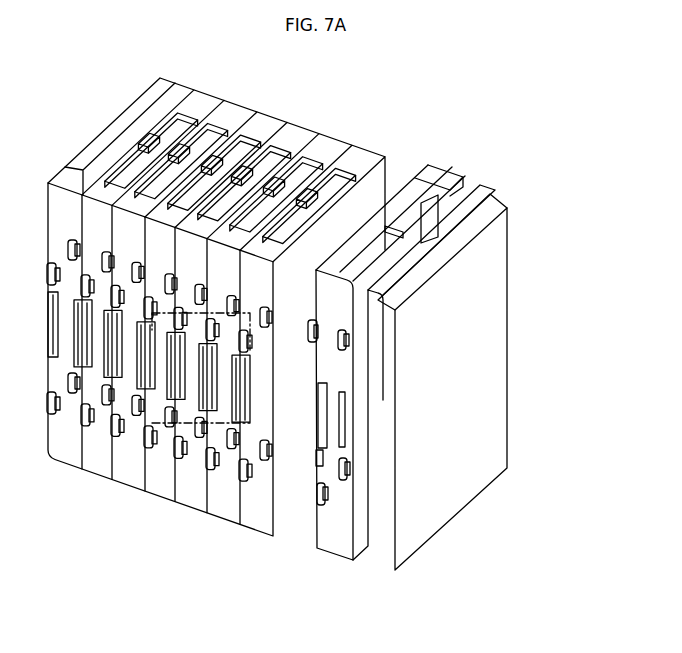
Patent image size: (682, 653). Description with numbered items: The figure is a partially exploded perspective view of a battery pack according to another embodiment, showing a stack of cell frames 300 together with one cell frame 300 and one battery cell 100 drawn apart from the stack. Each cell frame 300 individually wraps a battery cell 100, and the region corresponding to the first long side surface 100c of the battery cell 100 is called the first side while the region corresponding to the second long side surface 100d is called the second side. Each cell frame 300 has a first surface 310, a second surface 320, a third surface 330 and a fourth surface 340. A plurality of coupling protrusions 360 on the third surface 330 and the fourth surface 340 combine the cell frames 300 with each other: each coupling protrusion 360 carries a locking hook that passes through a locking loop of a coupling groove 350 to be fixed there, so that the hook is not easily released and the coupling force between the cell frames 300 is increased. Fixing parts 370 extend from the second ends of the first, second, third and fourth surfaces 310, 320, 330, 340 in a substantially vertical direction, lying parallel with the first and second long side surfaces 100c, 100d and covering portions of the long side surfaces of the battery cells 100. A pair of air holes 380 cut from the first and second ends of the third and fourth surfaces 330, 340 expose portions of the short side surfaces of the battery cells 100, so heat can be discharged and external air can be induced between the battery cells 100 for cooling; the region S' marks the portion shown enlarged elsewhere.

The battery cell 100 is at (490, 382).
The first long side surface 100c is at (467, 433).
The second long side surface 100d is at (351, 482).
The cell frame 300 is at (348, 355).
The first surface 310 is at (407, 188).
The second surface 320 is at (363, 559).
The third surface 330 is at (327, 525).
The fourth surface 340 is at (468, 190).
The coupling groove 350 is at (262, 306).
The coupling protrusion 360 is at (312, 320).
The fixing part 370 is at (424, 205).
The air hole 380 is at (316, 360).
The coupling region S' is at (175, 435).